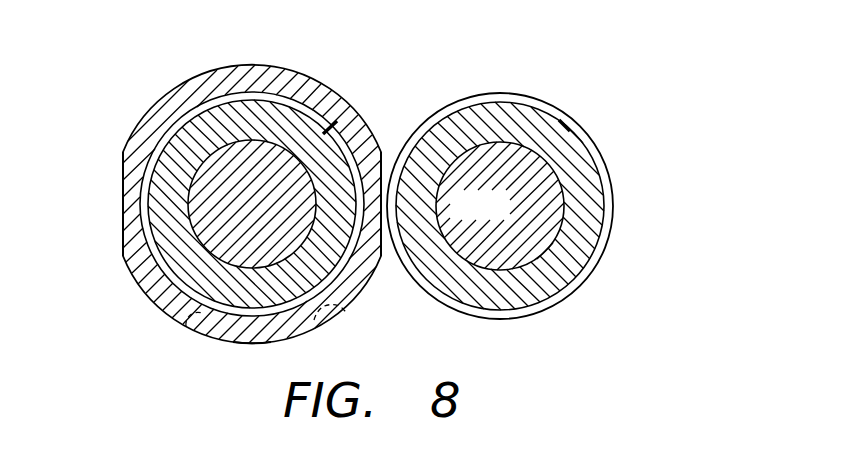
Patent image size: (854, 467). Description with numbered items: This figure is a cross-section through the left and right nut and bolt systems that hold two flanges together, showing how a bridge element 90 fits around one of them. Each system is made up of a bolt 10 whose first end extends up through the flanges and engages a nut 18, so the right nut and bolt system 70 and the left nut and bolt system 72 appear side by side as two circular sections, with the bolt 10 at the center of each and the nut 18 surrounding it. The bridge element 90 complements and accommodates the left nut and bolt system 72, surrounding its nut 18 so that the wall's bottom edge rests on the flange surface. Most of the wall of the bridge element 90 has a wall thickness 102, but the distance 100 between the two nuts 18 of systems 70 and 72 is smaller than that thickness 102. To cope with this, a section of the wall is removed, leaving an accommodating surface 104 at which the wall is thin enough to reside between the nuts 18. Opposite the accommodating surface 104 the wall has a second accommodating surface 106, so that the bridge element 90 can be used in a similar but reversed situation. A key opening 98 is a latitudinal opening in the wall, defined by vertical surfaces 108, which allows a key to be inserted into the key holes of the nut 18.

The bolt 10 is at (261, 140).
The nut 18 is at (214, 113).
The right nut and bolt system 70 is at (563, 98).
The left nut and bolt system 72 is at (328, 81).
The bridge element 90 is at (150, 110).
The key opening 98 is at (250, 343).
The distance between the two nuts 100 is at (320, 206).
The wall thickness 102 is at (195, 250).
The accommodating surface 104 is at (387, 150).
The second accommodating surface 106 is at (122, 211).
The vertical surfaces 108 is at (197, 322).